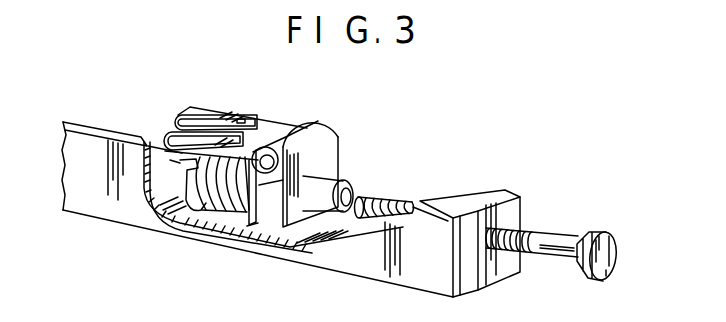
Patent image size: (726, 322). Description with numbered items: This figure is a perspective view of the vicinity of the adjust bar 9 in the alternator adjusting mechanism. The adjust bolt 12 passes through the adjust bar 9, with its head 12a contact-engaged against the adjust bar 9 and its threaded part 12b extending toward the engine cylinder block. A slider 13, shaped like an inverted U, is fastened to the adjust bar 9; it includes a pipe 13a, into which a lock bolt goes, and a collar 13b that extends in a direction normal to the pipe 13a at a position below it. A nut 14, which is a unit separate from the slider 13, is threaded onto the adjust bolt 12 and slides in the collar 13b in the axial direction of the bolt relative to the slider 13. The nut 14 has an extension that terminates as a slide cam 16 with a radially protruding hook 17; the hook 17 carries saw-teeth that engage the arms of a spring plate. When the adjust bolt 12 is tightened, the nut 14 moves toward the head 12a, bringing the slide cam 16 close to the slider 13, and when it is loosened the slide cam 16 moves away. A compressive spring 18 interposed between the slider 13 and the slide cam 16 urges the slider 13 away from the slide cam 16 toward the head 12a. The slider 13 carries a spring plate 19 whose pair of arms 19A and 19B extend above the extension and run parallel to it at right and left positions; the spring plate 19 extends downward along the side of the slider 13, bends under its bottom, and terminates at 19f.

The adjust bar 9 is at (325, 262).
The adjust bolt 12 is at (528, 229).
The head of adjust bolt 12a is at (606, 246).
The threaded part of adjust bolt 12b is at (384, 197).
The slider 13 is at (325, 127).
The pipe 13a is at (272, 145).
The collar 13b is at (252, 220).
The nut 14 is at (323, 177).
The slide cam 16 is at (170, 160).
The hook 17 is at (216, 114).
The compressive spring 18 is at (242, 117).
The spring plate 19 is at (268, 130).
The arm 19A is at (192, 107).
The arm 19B is at (189, 122).
The terminal end of spring plate 19f is at (256, 232).